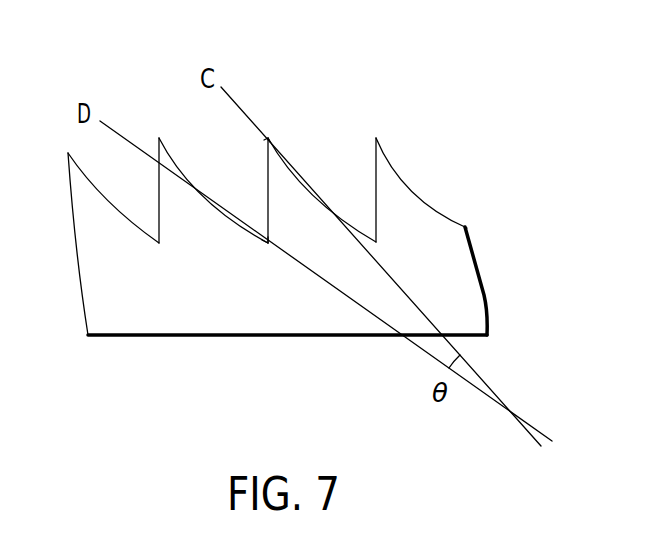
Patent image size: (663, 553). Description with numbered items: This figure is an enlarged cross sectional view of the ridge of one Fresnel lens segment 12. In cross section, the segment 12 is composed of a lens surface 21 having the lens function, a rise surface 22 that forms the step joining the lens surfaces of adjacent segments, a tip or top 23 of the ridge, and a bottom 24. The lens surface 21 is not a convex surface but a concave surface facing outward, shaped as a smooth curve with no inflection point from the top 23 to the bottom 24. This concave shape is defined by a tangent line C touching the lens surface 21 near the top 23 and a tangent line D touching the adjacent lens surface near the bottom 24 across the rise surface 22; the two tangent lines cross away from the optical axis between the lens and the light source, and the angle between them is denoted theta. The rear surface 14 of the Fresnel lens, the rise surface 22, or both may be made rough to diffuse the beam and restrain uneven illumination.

The Fresnel lens segment 12 is at (295, 229).
The rear surface 14 is at (288, 337).
The lens surface 21 is at (352, 228).
The rise surface 22 is at (266, 185).
The top of the ridge 23 is at (268, 140).
The bottom 24 is at (268, 243).